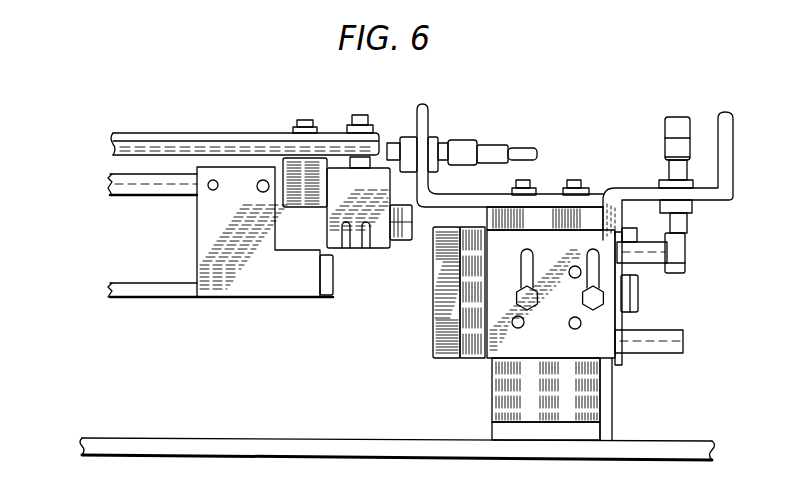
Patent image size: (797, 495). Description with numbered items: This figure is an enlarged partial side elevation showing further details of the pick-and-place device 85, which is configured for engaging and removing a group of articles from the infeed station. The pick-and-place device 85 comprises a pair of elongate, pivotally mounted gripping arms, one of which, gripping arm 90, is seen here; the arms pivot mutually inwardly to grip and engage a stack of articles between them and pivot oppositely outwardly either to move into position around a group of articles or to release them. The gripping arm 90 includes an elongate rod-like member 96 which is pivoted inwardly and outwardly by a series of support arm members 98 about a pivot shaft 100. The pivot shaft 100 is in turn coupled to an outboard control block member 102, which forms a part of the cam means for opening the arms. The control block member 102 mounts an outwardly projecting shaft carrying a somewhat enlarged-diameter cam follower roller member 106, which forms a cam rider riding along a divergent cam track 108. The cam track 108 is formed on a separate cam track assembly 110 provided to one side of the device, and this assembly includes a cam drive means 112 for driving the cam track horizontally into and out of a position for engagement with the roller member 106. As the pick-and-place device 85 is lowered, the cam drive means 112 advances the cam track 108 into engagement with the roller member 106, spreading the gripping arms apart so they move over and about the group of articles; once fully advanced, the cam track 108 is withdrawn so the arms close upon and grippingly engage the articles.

The pick-and-place device 85 is at (207, 311).
The gripping arm 90 is at (176, 267).
The rod-like member 96 is at (121, 298).
The support arm member 98 is at (215, 232).
The pivot shaft 100 is at (121, 196).
The control block member 102 is at (358, 234).
The cam follower roller member 106 is at (411, 242).
The cam track 108 is at (443, 317).
The cam track assembly 110 is at (458, 369).
The cam drive means 112 is at (604, 352).